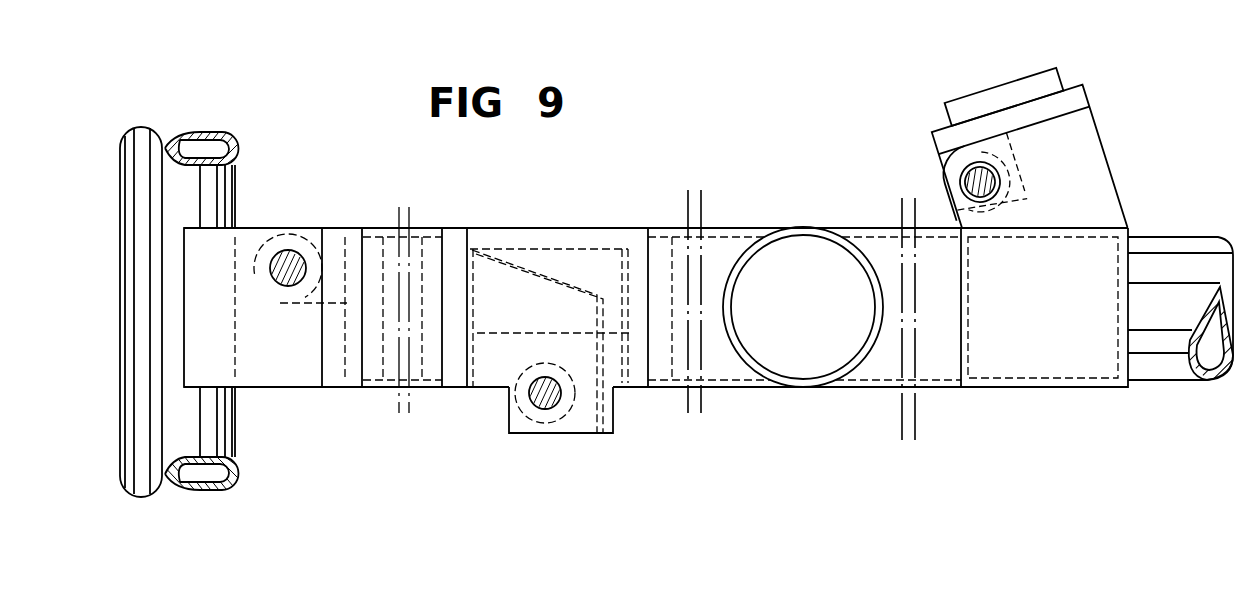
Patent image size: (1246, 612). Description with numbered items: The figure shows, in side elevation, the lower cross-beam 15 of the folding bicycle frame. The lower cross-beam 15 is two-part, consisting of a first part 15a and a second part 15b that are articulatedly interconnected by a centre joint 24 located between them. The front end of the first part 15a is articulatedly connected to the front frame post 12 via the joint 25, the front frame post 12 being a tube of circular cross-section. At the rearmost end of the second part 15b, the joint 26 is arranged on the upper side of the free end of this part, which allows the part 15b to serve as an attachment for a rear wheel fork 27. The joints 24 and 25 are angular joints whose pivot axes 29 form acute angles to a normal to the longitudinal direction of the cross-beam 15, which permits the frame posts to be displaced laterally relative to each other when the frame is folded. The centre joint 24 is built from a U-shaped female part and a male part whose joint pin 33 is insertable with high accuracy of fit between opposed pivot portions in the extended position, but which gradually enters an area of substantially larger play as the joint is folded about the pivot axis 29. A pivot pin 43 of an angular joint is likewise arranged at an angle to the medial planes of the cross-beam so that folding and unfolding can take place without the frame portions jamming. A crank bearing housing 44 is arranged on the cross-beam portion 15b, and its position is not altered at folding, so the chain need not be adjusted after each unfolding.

The front frame post 12 is at (203, 195).
The lower cross-beam 15 is at (629, 219).
The first part of the lower cross-beam 15a is at (433, 229).
The second part of the lower cross-beam 15b is at (720, 389).
The centre joint 24 is at (543, 409).
The joint 25 is at (298, 251).
The joint 26 is at (999, 175).
The rear wheel fork 27 is at (1167, 391).
The pivot axis 29 is at (533, 400).
The joint pin 33 is at (583, 403).
The pivot pin 43 is at (323, 229).
The crank bearing housing 44 is at (820, 236).